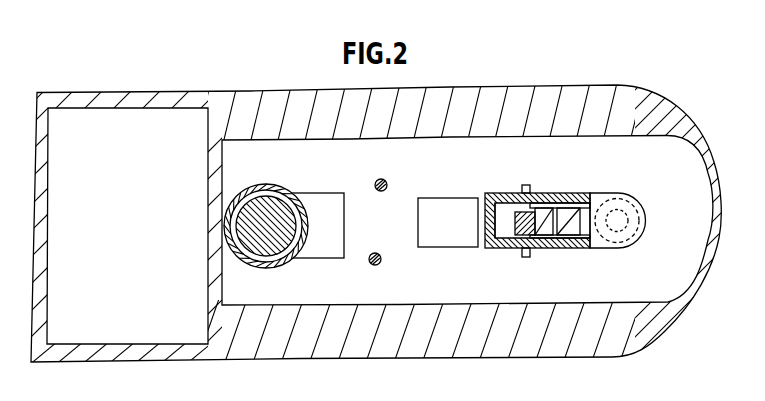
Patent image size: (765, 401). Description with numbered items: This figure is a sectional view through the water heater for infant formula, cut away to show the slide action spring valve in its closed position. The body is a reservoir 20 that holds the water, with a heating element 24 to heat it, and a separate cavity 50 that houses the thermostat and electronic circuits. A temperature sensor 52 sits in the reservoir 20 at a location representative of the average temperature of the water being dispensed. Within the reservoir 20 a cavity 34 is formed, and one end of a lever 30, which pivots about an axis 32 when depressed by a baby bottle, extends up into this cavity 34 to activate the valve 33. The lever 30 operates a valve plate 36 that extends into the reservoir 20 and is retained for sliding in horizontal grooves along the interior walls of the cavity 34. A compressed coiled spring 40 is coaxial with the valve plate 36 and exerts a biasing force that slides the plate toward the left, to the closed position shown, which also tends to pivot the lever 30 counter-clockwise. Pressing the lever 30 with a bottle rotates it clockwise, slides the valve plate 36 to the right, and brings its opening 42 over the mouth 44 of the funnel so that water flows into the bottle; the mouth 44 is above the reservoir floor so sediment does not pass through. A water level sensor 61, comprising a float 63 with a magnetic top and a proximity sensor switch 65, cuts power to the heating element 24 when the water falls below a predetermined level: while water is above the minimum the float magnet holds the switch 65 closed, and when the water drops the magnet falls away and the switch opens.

The reservoir 20 is at (441, 148).
The heating element 24 is at (377, 253).
The lever 30 is at (540, 192).
The axis 32 is at (501, 192).
The valve 33 is at (622, 160).
The cavity 34 is at (503, 250).
The valve plate 36 is at (624, 193).
The compressed coiled spring 40 is at (550, 243).
The opening 42 is at (565, 193).
The mouth 44 is at (642, 233).
The cavity 50 is at (117, 137).
The temperature sensor 52 is at (447, 198).
The water level sensor 61 is at (280, 184).
The float 63 is at (265, 185).
The proximity sensor switch 65 is at (314, 258).